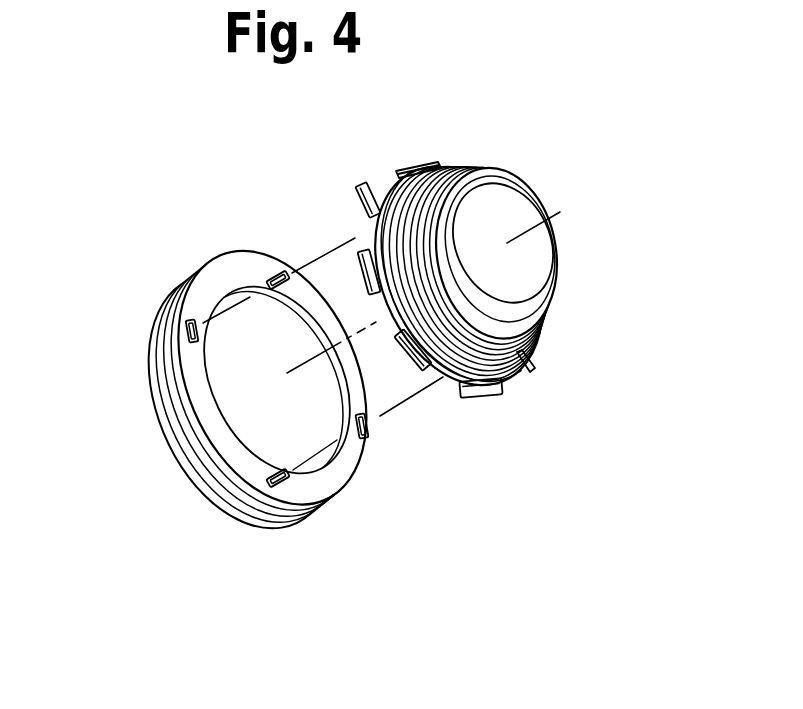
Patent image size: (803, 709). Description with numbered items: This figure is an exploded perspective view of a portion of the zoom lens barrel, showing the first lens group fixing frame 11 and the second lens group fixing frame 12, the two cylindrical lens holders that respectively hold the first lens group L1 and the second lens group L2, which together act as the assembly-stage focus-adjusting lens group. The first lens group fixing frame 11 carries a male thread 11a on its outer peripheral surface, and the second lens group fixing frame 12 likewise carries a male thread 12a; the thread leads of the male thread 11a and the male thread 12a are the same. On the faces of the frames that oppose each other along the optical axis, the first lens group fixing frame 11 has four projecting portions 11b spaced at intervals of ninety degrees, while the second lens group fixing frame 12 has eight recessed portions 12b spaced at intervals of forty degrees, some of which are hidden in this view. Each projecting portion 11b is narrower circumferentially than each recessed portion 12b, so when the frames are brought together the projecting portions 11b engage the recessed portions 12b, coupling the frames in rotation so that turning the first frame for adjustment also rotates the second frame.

The first lens group fixing frame 11 is at (333, 487).
The male thread 11a is at (207, 443).
The projecting portions 11b is at (188, 331).
The second lens group fixing frame 12 is at (530, 367).
The male thread 12a is at (405, 193).
The recessed portions 12b is at (452, 383).
The first lens group L1 is at (222, 368).
The second lens group L2 is at (553, 258).